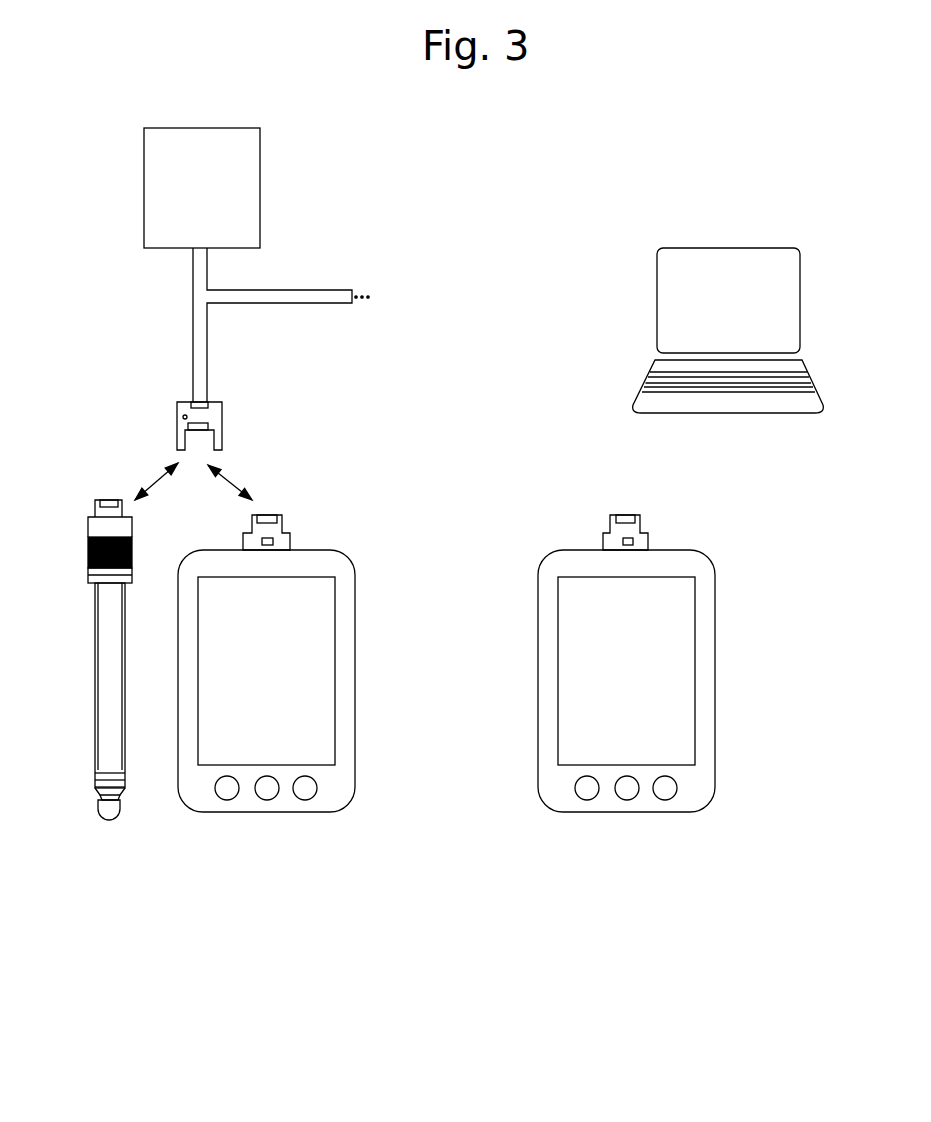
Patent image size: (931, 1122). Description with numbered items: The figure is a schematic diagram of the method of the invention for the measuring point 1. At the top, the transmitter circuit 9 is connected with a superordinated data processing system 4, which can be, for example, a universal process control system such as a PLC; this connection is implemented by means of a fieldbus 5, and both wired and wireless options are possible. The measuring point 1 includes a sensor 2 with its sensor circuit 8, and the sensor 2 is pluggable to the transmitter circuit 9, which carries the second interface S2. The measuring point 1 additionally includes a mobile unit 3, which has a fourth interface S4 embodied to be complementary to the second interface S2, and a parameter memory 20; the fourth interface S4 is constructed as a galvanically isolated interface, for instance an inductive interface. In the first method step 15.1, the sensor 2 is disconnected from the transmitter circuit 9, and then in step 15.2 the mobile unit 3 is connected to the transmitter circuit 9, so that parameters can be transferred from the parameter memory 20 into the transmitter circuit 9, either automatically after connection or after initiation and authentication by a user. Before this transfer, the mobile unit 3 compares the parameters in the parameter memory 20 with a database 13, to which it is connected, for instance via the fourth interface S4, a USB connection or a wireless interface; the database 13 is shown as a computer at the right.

The measuring point 1 is at (125, 357).
The sensor 2 is at (136, 727).
The mobile unit 3 is at (446, 726).
The superordinated data processing system 4 is at (225, 197).
The fieldbus 5 is at (213, 312).
The sensor circuit 8 is at (112, 530).
The transmitter circuit 9 is at (243, 418).
The database 13 is at (625, 329).
The first method step 15.1 is at (148, 477).
The step 15.2 is at (233, 475).
The parameter memory 20 is at (308, 527).
The second interface S2 is at (210, 427).
The fourth interface S4 is at (277, 519).